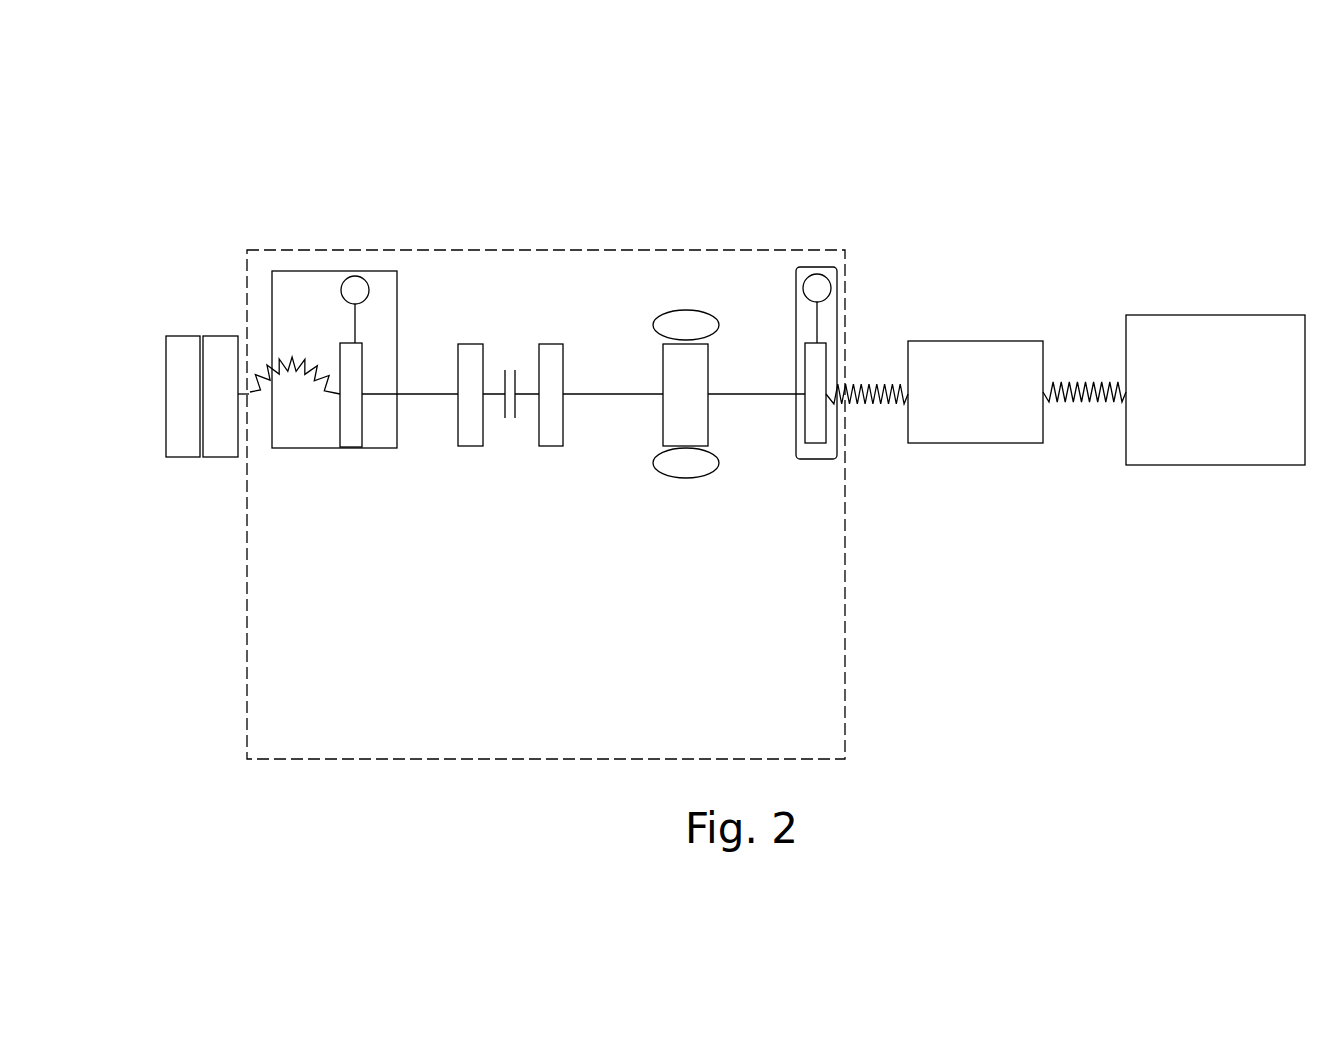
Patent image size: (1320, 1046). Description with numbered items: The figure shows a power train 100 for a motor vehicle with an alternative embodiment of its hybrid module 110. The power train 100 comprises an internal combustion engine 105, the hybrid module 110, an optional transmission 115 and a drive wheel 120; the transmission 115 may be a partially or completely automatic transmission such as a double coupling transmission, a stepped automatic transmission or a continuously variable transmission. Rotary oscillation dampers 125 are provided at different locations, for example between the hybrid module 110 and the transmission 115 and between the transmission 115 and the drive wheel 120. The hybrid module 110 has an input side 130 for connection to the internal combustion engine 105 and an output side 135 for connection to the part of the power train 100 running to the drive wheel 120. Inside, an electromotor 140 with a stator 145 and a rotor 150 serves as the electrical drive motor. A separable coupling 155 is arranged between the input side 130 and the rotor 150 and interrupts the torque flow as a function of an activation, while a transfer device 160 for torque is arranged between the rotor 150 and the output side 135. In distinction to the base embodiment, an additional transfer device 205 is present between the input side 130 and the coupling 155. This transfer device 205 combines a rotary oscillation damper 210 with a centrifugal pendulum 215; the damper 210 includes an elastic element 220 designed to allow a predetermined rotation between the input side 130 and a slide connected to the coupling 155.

The power train 100 is at (170, 138).
The internal combustion engine 105 is at (177, 336).
The hybrid module 110 is at (245, 254).
The transmission 115 is at (1000, 341).
The drive wheel 120 is at (1222, 315).
The rotary oscillation damper 125 is at (862, 377).
The input side 130 is at (251, 399).
The output side 135 is at (857, 415).
The electromotor 140 is at (677, 228).
The stator 145 is at (717, 310).
The rotor 150 is at (662, 357).
The separable coupling 155 is at (510, 316).
The transfer device 160 is at (817, 232).
The transfer device 205 is at (283, 242).
The rotary oscillation damper 210 is at (289, 414).
The centrifugal pendulum 215 is at (353, 462).
The elastic element 220 is at (278, 358).